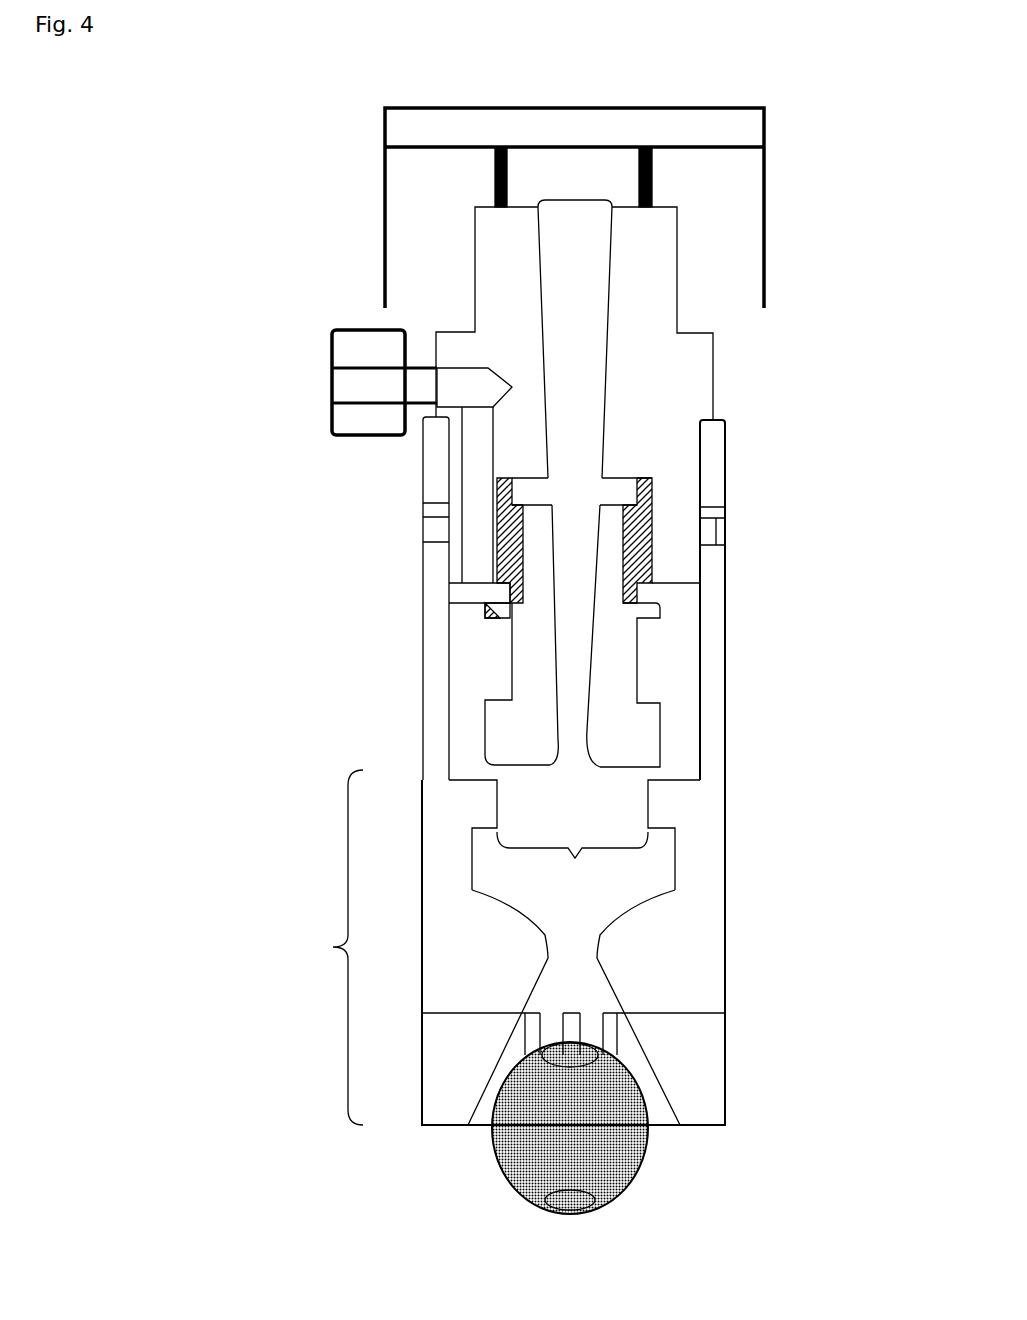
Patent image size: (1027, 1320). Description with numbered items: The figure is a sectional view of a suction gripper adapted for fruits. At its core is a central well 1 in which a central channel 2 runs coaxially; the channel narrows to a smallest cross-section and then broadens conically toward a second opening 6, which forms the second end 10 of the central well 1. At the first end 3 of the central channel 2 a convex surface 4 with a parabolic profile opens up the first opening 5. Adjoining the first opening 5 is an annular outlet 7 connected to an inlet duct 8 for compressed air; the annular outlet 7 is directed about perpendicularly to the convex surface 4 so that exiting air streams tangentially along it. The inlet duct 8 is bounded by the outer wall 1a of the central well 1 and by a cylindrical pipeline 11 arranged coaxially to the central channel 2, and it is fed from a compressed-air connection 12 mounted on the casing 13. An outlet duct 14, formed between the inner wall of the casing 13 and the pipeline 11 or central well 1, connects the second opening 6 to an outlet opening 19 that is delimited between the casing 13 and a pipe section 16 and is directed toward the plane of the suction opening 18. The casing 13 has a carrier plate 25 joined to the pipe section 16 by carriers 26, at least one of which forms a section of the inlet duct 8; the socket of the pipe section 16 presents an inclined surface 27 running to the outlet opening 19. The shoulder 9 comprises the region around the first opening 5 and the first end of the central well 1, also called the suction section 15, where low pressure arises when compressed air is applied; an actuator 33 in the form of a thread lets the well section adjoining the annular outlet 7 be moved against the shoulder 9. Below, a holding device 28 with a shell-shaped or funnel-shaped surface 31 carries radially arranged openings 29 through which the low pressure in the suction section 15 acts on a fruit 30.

The central well 1 is at (512, 428).
The outer wall of the central well 1a is at (647, 668).
The central channel 2 is at (582, 618).
The first end of the central channel 3 is at (670, 760).
The convex surface 4 is at (577, 764).
The first opening 5 is at (602, 766).
The second opening 6 is at (575, 195).
The annular outlet 7 is at (662, 781).
The inlet duct 8 is at (467, 429).
The shoulder 9 is at (657, 793).
The second end of the central well 10 is at (682, 212).
The pipeline 11 is at (418, 466).
The compressed-air connection 12 is at (330, 325).
The casing 13 is at (381, 157).
The outlet duct 14 is at (720, 255).
The suction section 15 is at (329, 947).
The pipe section 16 is at (419, 777).
The suction opening 18 is at (577, 858).
The outlet opening 19 is at (735, 316).
The carrier plate 25 is at (381, 121).
The carriers 26 is at (496, 149).
The surface of the socket 27 is at (468, 241).
The holding device 28 is at (729, 1075).
The openings 29 is at (540, 1030).
The fruit 30 is at (490, 1150).
The shell-shaped or funnel-shaped surface 31 is at (656, 1127).
The actuator 33 is at (656, 520).